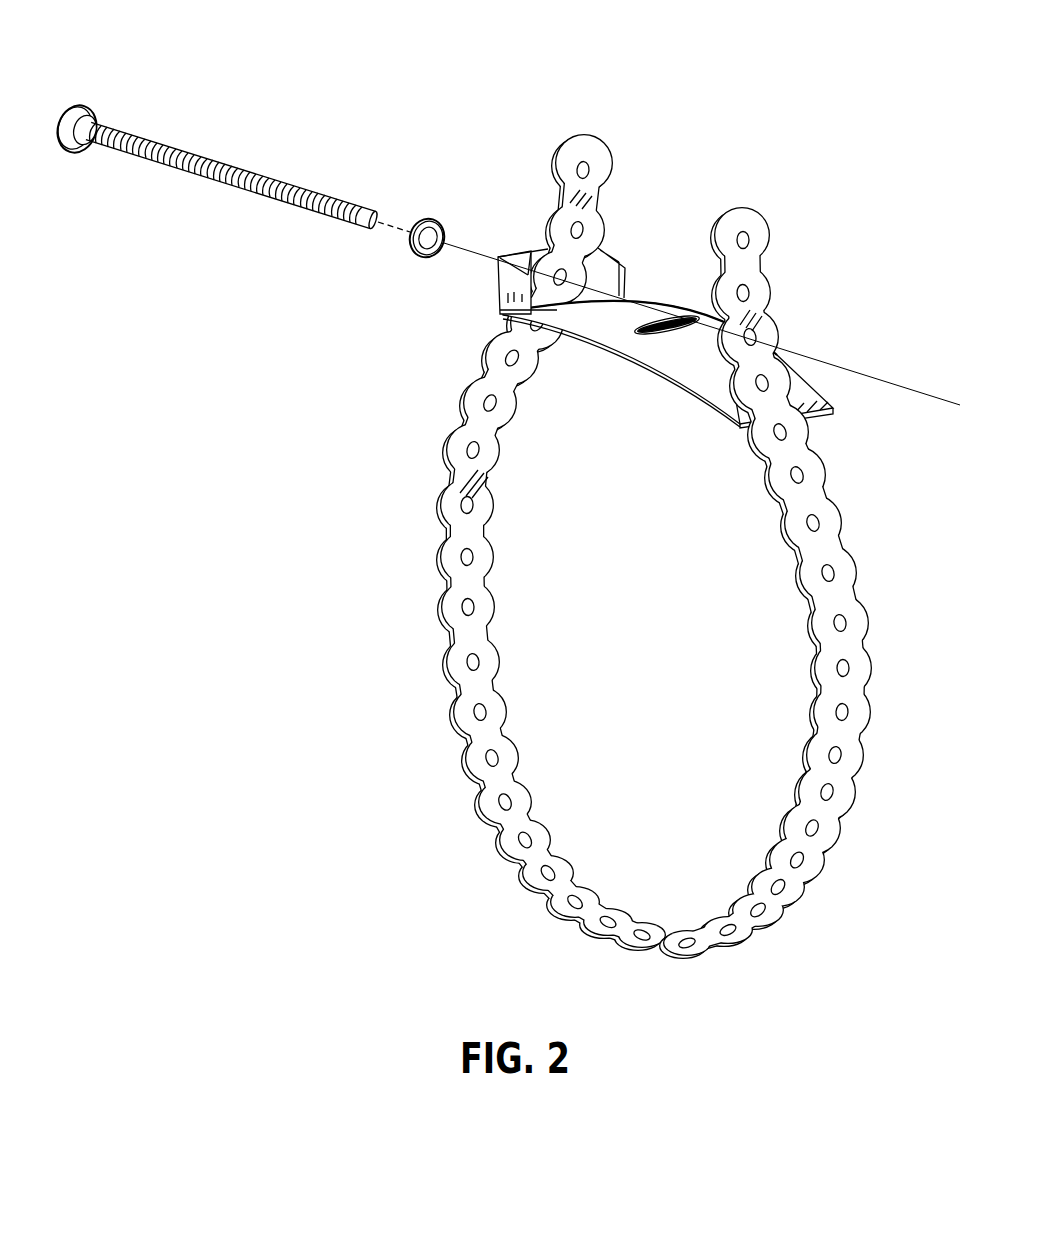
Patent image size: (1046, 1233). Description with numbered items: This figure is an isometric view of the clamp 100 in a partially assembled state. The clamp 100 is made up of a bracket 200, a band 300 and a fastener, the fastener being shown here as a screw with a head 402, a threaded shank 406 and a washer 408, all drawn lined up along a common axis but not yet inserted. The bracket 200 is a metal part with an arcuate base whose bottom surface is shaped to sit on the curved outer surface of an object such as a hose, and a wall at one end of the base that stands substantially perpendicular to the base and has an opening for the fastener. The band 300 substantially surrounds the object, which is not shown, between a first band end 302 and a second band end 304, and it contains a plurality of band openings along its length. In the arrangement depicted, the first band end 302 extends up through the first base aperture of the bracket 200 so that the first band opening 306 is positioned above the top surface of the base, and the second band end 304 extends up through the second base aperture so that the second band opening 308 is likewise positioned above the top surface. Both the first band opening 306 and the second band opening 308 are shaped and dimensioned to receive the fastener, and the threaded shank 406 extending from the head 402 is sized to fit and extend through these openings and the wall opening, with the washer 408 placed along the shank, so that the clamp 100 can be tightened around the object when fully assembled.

The clamp 100 is at (197, 37).
The bracket 200 is at (637, 358).
The band 300 is at (850, 497).
The first band end 302 is at (583, 136).
The second band end 304 is at (747, 220).
The first band opening 306 is at (553, 277).
The second band opening 308 is at (760, 337).
The head 402 is at (76, 152).
The threaded shank 406 is at (215, 156).
The washer 408 is at (411, 250).